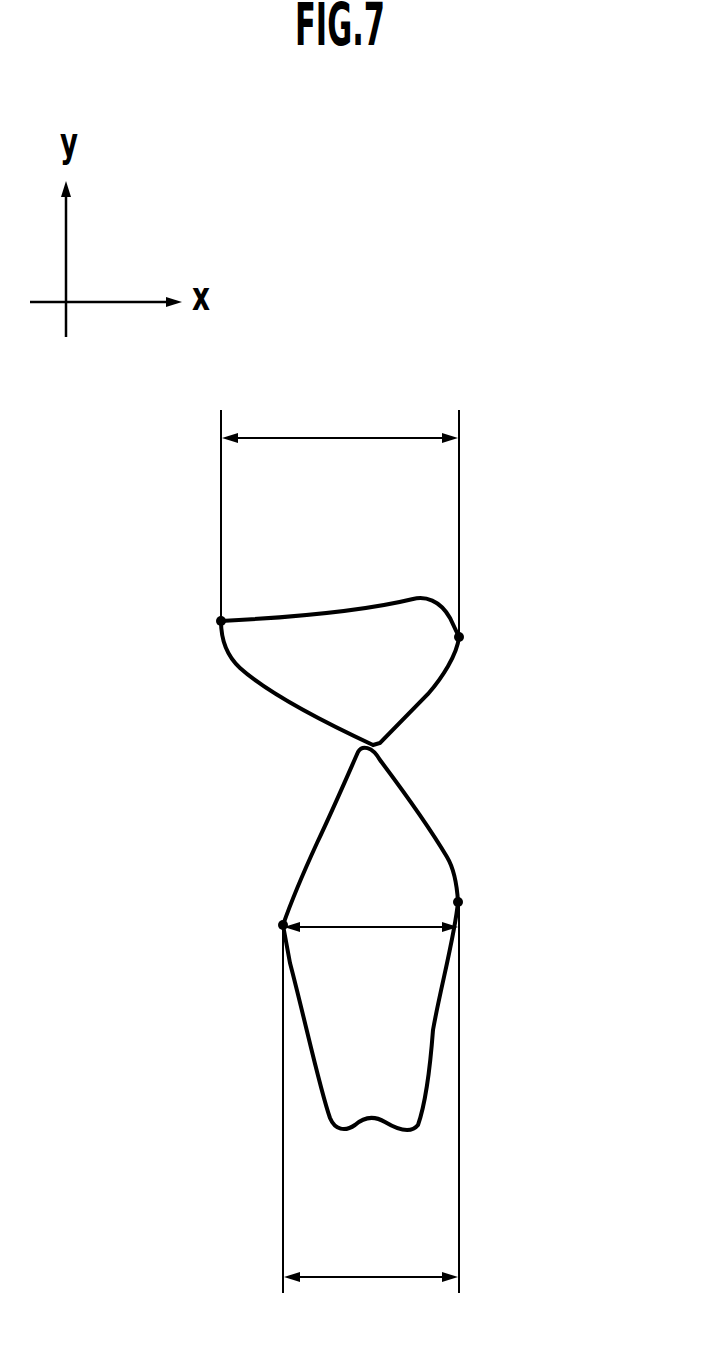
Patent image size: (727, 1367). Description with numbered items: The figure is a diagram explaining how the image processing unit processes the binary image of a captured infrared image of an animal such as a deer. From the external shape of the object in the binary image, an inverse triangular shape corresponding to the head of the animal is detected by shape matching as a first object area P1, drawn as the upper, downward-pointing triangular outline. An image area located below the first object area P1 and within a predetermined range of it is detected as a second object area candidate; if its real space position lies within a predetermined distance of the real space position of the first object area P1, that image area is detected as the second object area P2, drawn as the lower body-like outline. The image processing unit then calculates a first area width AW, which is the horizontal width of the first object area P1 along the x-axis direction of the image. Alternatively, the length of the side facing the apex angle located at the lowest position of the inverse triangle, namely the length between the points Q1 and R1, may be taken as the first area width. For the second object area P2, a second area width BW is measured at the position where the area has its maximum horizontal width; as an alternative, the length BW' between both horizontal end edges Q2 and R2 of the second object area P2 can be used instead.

The first object area P1 is at (428, 694).
The second object area P2 is at (437, 997).
The end point of side facing the apex angle of the first object area Q1 is at (216, 621).
The end point of side facing the apex angle of the first object area R1 is at (464, 636).
The end edge of the second object area Q2 is at (278, 927).
The end edge of the second object area R2 is at (463, 900).
The first area width AW is at (340, 512).
The second area width BW is at (371, 1082).
The length between both end edges of the second object area BW' is at (371, 1254).